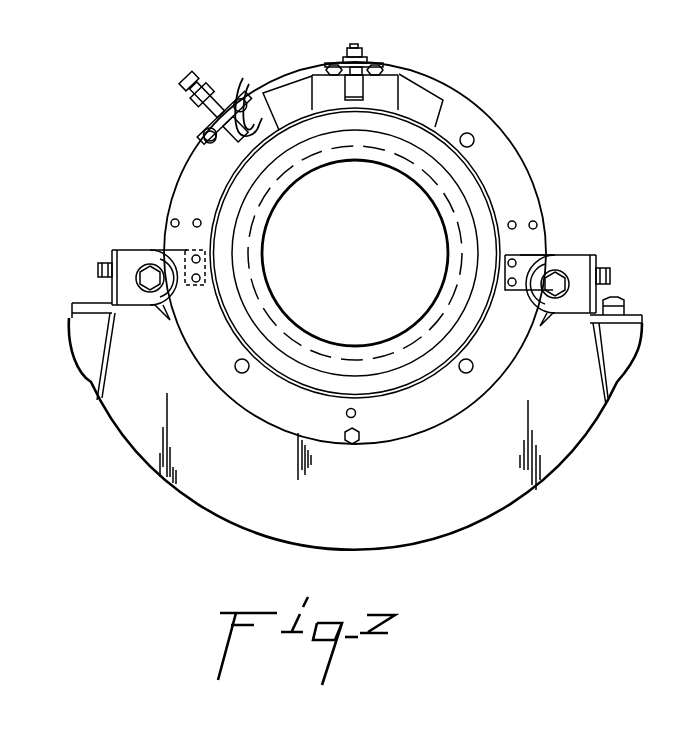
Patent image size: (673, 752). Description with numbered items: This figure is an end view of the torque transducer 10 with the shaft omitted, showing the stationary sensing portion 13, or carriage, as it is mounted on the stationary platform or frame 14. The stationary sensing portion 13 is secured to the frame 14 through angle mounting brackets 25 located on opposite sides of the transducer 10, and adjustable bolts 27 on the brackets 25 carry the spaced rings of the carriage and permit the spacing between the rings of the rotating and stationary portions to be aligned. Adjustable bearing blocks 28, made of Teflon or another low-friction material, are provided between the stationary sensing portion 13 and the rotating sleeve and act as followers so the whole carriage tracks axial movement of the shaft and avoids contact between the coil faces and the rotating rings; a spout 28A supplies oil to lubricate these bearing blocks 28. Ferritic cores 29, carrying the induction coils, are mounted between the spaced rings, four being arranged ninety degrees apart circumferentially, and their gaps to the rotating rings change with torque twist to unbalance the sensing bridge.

The torque transducer 10 is at (547, 158).
The stationary sensing portion 13 is at (438, 86).
The stationary platform or frame 14 is at (545, 474).
The angle mounting brackets 25 is at (110, 298).
The adjustable bolts 27 is at (150, 266).
The adjustable bearing blocks 28 is at (390, 90).
The spout 28A is at (246, 76).
The ferritic cores 29 is at (204, 138).